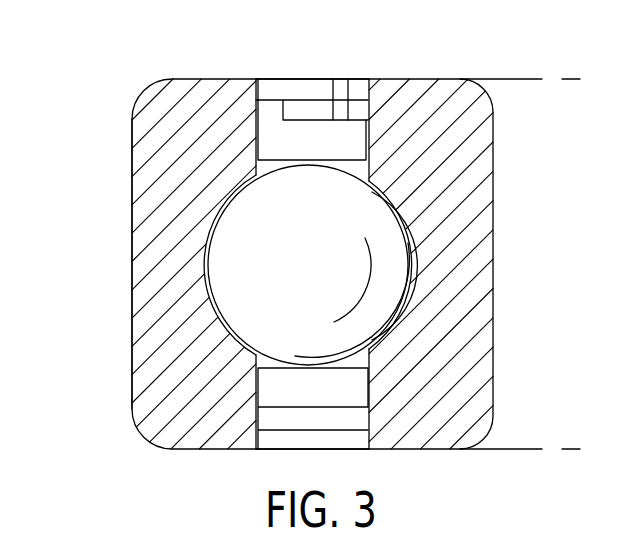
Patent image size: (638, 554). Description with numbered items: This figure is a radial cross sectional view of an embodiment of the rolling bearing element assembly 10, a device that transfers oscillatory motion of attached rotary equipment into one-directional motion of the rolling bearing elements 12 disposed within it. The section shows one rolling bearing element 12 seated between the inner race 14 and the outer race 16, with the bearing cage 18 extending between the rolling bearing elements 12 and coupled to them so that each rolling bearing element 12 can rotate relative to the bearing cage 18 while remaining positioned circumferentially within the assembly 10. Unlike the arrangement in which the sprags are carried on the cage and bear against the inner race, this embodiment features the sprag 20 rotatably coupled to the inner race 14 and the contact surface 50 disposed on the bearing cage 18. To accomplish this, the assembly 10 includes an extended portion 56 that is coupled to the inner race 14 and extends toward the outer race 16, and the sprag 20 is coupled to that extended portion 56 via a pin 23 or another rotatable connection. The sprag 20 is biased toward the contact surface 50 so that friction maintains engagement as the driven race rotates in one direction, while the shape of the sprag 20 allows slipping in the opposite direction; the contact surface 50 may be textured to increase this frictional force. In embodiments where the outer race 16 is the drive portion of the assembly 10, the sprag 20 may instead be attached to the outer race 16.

The bearing assembly 10 is at (107, 68).
The rolling bearing element 12 is at (297, 279).
The inner race 14 is at (486, 163).
The outer race 16 is at (137, 245).
The bearing cage 18 is at (283, 137).
The sprag 20 is at (363, 105).
The pin 23 is at (342, 85).
The contact surface 50 is at (283, 109).
The extended portion 56 is at (295, 79).